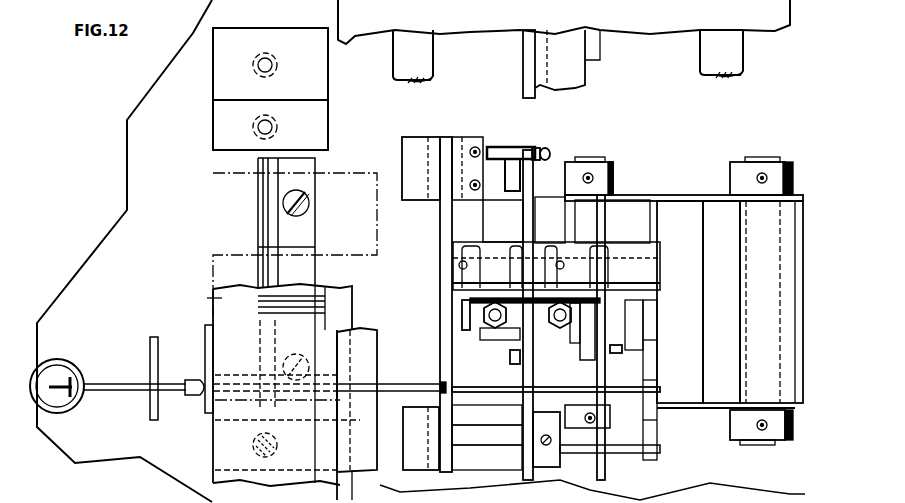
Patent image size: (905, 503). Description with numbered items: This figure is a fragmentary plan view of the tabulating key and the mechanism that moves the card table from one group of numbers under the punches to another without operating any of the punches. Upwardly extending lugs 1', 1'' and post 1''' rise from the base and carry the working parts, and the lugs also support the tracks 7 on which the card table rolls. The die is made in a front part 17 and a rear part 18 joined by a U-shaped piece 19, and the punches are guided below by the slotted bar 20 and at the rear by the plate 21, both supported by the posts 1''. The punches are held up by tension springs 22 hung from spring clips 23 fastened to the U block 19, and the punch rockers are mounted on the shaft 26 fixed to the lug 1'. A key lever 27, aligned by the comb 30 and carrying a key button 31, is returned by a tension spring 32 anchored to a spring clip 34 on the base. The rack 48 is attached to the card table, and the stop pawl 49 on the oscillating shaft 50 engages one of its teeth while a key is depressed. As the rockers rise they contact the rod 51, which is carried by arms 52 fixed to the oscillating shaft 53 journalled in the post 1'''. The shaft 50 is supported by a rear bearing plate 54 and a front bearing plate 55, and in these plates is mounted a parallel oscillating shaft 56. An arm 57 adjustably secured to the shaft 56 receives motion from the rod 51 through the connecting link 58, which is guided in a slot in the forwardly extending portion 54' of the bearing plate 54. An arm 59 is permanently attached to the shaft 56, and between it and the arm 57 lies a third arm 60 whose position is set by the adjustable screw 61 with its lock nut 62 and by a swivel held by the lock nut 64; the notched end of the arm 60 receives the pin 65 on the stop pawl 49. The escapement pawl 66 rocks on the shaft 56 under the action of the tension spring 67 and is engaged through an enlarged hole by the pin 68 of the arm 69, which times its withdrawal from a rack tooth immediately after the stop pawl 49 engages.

The lug 1' is at (448, 297).
The lug 1'' is at (250, 89).
The post 1''' is at (801, 273).
The track 7 is at (433, 58).
The front die 17 is at (213, 439).
The rear die 18 is at (370, 460).
The U-shaped piece 19 is at (377, 247).
The slotted bar 20 is at (215, 299).
The plate 21 is at (340, 314).
The tension spring 22 is at (191, 380).
The spring clip 23 is at (205, 332).
The shaft 26 is at (440, 218).
The key lever 27 is at (118, 383).
The comb 30 is at (150, 410).
The key button 31 is at (75, 362).
The tension spring 32 is at (397, 384).
The spring clip 34 is at (259, 222).
The rack 48 is at (528, 52).
The stop pawl 49 is at (528, 468).
The oscillating shaft 50 is at (632, 445).
The rod 51 is at (597, 210).
The arm 52 is at (690, 197).
The oscillating shaft 53 is at (765, 162).
The bearing plate 54 is at (727, 304).
The forwardly extending portion 54' is at (663, 341).
The bearing plate 55 is at (445, 147).
The oscillating shaft 56 is at (628, 255).
The arm 57 is at (595, 322).
The connecting link 58 is at (650, 352).
The arm 59 is at (452, 288).
The arm 60 is at (503, 262).
The adjustable screw 61 is at (505, 330).
The lock nut 62 is at (510, 350).
The lock nut 64 is at (462, 320).
The pin 65 is at (515, 364).
The escapement pawl 66 is at (537, 152).
The tension spring 67 is at (515, 150).
The pin 68 is at (517, 160).
The arm 69 is at (535, 212).